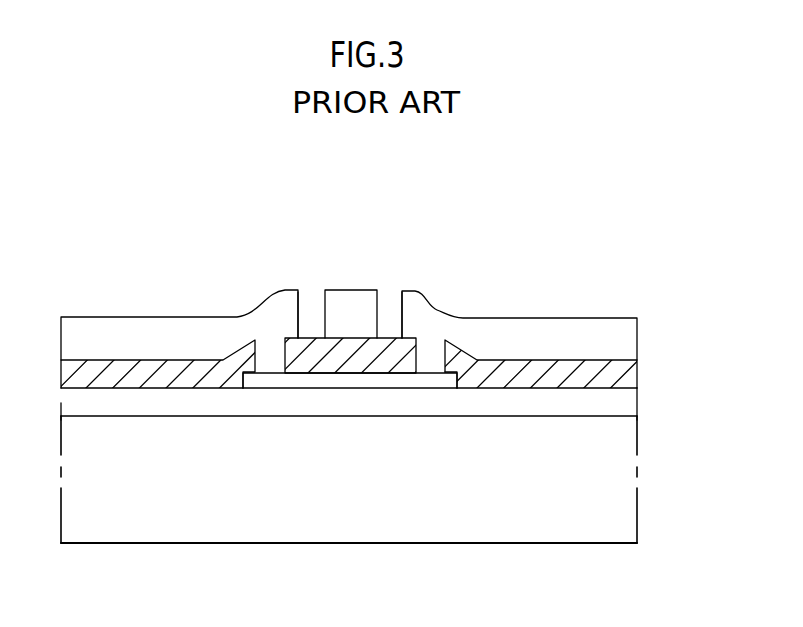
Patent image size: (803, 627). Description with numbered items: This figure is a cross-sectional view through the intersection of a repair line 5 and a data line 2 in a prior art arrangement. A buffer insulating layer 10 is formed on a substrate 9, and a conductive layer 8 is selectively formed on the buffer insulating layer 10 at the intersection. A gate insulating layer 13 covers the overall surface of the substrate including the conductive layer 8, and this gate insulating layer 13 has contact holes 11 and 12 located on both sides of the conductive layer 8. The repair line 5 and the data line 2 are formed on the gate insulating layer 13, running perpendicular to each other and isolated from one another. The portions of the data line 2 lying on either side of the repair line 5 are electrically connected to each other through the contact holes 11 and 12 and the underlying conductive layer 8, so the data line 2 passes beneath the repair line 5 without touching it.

The data line 2 is at (160, 330).
The repair line 5 is at (350, 302).
The conductive layer 8 is at (365, 377).
The substrate 9 is at (617, 486).
The buffer insulating layer 10 is at (613, 400).
The contact hole 11 is at (265, 343).
The contact hole 12 is at (415, 318).
The gate insulating layer 13 is at (618, 376).